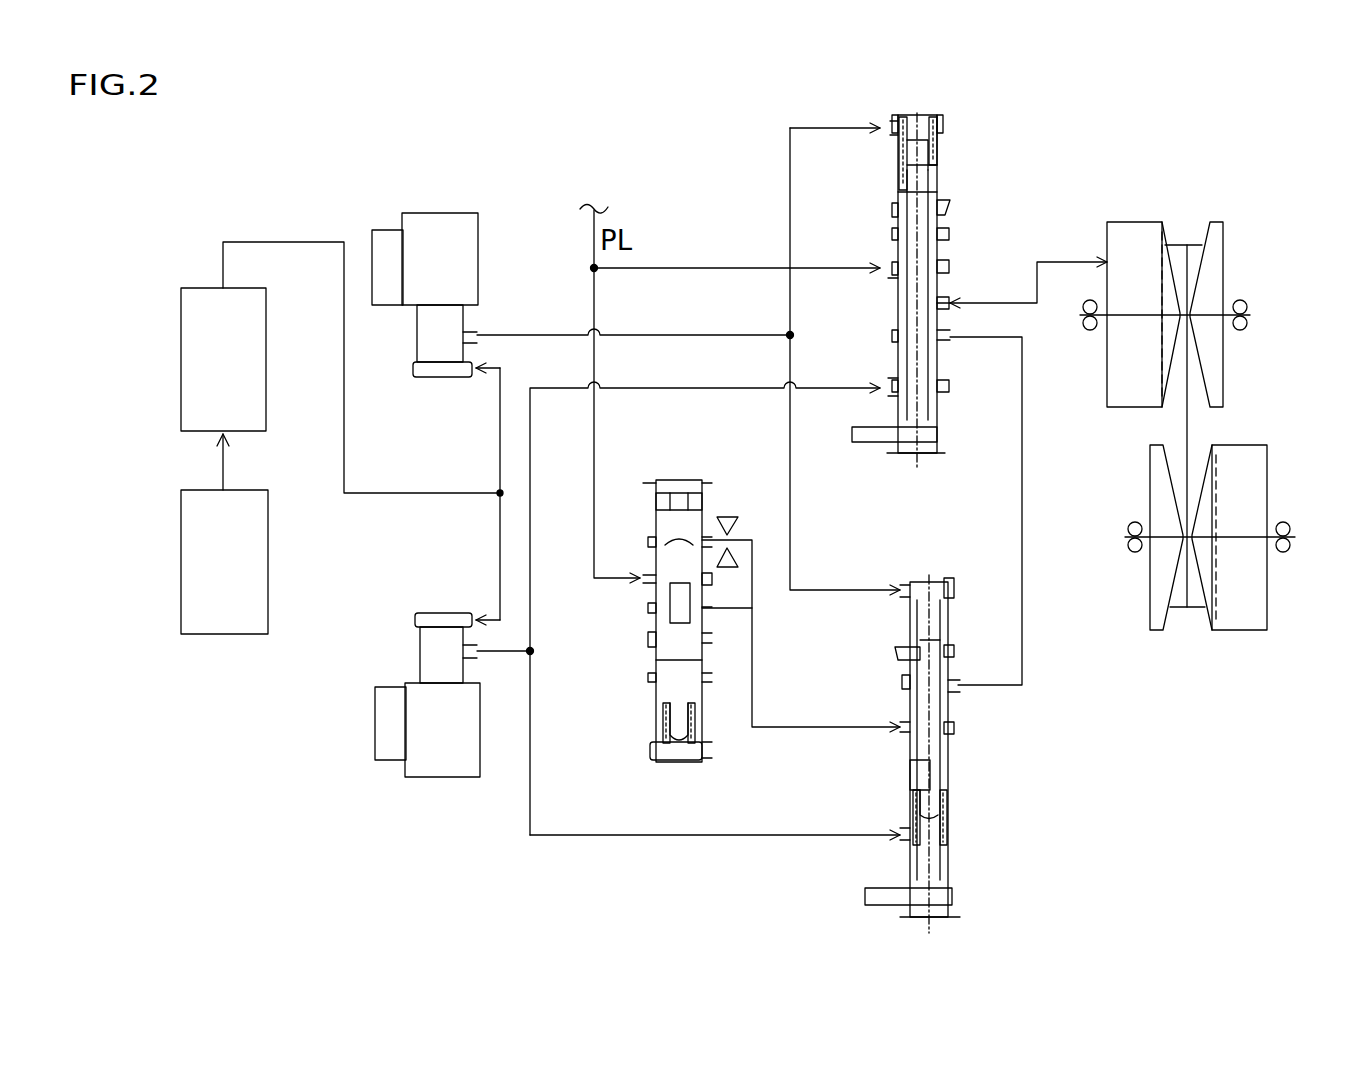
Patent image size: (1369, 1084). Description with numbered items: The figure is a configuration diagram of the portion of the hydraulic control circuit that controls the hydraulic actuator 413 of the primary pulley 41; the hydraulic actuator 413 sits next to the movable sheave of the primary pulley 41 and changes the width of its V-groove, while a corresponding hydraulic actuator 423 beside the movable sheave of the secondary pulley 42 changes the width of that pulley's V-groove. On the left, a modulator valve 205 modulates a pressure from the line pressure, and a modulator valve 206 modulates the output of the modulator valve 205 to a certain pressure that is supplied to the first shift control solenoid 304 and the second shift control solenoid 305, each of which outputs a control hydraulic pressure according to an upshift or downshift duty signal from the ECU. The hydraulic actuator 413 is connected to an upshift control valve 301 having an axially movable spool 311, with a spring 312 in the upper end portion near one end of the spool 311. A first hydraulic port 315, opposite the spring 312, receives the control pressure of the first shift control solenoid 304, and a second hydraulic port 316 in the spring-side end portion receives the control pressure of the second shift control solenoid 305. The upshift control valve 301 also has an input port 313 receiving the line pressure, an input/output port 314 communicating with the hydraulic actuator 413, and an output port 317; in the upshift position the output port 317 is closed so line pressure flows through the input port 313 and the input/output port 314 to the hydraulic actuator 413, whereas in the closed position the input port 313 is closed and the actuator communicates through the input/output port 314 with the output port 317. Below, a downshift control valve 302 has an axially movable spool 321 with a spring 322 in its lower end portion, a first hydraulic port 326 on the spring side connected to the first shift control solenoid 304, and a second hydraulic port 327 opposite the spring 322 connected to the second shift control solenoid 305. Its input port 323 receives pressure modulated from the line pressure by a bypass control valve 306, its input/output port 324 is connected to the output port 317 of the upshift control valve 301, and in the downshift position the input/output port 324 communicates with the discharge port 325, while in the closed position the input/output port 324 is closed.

The modulator valve 205 is at (268, 490).
The modulator valve 206 is at (266, 315).
The shift control solenoid (DS1) 304 is at (388, 640).
The shift control solenoid (DS2) 305 is at (382, 218).
The bypass control valve 306 is at (705, 470).
The upshift control valve 301 is at (956, 384).
The spool 311 is at (902, 257).
The spring 312 is at (898, 153).
The input port 313 is at (890, 272).
The input/output port 314 is at (945, 296).
The first hydraulic port 315 is at (890, 385).
The second hydraulic port 316 is at (889, 123).
The output port 317 is at (960, 345).
The downshift control valve 302 is at (928, 716).
The spool 321 is at (943, 742).
The spring 322 is at (947, 800).
The input port 323 is at (905, 740).
The input/output port 324 is at (955, 685).
The discharge port 325 is at (890, 655).
The first hydraulic port 326 is at (900, 830).
The second hydraulic port 327 is at (900, 586).
The primary pulley 41 is at (1181, 272).
The hydraulic actuator 413 is at (1133, 225).
The secondary pulley 42 is at (1218, 528).
The hydraulic actuator 423 is at (1244, 618).